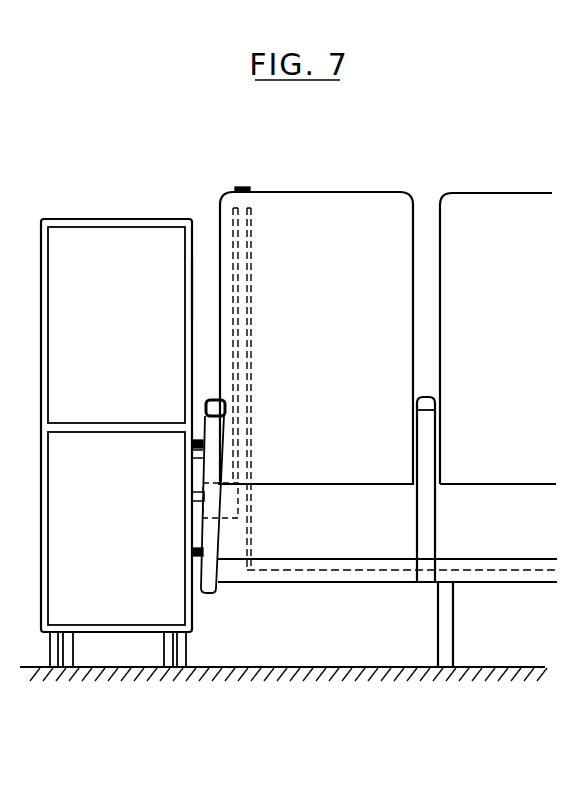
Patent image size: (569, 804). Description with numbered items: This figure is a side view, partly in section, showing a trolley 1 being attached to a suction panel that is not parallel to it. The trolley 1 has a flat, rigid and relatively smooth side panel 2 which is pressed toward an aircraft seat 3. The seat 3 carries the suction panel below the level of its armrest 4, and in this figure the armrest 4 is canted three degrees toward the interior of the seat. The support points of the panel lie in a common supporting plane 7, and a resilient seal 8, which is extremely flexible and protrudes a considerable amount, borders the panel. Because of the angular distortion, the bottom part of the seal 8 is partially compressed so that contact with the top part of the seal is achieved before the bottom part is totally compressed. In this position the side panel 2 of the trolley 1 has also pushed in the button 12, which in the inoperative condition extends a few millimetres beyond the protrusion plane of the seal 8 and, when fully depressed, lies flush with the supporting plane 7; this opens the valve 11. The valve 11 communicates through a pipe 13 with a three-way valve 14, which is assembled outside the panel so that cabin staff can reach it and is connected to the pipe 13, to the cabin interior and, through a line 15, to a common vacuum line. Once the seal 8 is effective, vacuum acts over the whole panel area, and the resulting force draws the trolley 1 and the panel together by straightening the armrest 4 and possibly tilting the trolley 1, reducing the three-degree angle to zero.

The trolley 1 is at (125, 219).
The side panel 2 is at (188, 290).
The seat 3 is at (350, 205).
The armrest 4 is at (213, 400).
The supporting plane 7 is at (200, 458).
The resilient seal 8 is at (195, 442).
The valve 11 is at (212, 487).
The button 12 is at (203, 497).
The pipe 13 is at (238, 283).
The three-way valve 14 is at (251, 191).
The line 15 is at (249, 322).